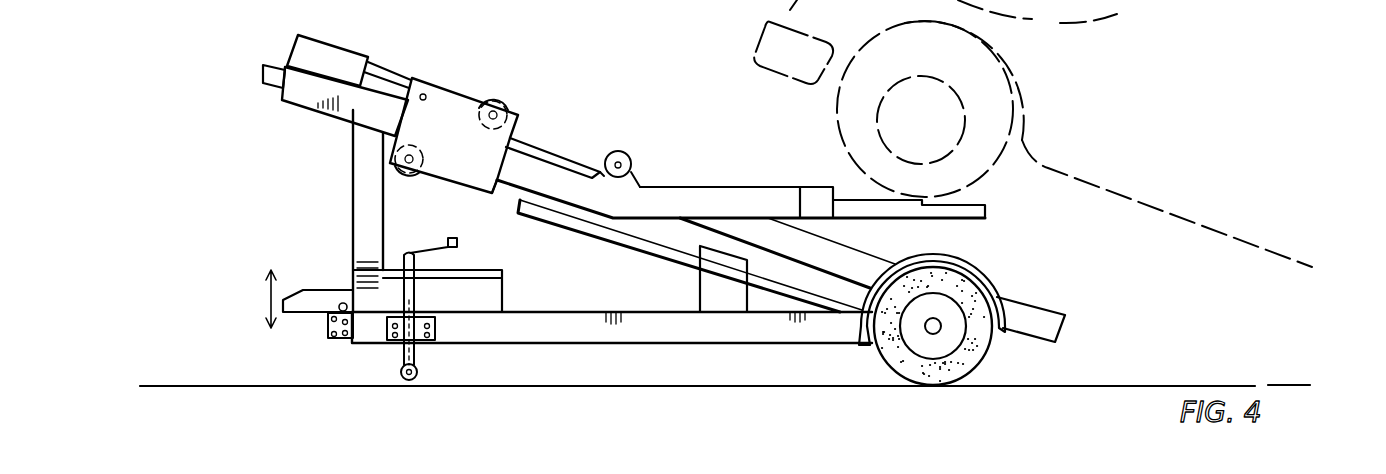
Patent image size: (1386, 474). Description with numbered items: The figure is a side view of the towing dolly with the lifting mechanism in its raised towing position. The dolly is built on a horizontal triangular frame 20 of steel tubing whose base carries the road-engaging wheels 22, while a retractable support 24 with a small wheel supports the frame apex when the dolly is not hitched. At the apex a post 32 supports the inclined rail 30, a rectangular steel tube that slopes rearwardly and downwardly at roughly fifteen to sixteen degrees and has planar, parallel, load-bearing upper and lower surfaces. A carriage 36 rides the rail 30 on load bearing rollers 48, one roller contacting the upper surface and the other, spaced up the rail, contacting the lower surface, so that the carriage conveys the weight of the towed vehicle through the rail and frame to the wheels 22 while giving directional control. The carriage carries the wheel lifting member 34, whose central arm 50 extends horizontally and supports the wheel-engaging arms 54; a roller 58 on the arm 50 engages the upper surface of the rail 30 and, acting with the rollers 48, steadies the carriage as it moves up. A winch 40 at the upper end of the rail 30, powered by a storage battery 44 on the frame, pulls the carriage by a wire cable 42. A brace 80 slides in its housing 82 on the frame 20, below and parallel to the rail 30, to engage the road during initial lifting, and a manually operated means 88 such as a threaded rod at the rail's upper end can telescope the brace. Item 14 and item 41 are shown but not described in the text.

The rail 14 is at (522, 124).
The horizontal triangular frame 20 is at (740, 332).
The road-engaging wheels 22 is at (975, 372).
The retractable support 24 is at (400, 352).
The inclined rail 30 is at (300, 100).
The post 32 is at (353, 202).
The wheel lifting member 34 is at (781, 217).
The carriage 36 is at (446, 88).
The winch 40 is at (325, 60).
The plate lip 41 is at (487, 185).
The wire cable 42 is at (388, 72).
The storage battery 44 is at (490, 300).
The load bearing rollers 48 is at (500, 102).
The central arm 50 is at (770, 192).
The wheel-engaging arms 54 is at (988, 212).
The roller 58 is at (627, 152).
The brace 80 is at (591, 240).
The housing 82 is at (700, 292).
The manually operated means 88 is at (272, 64).